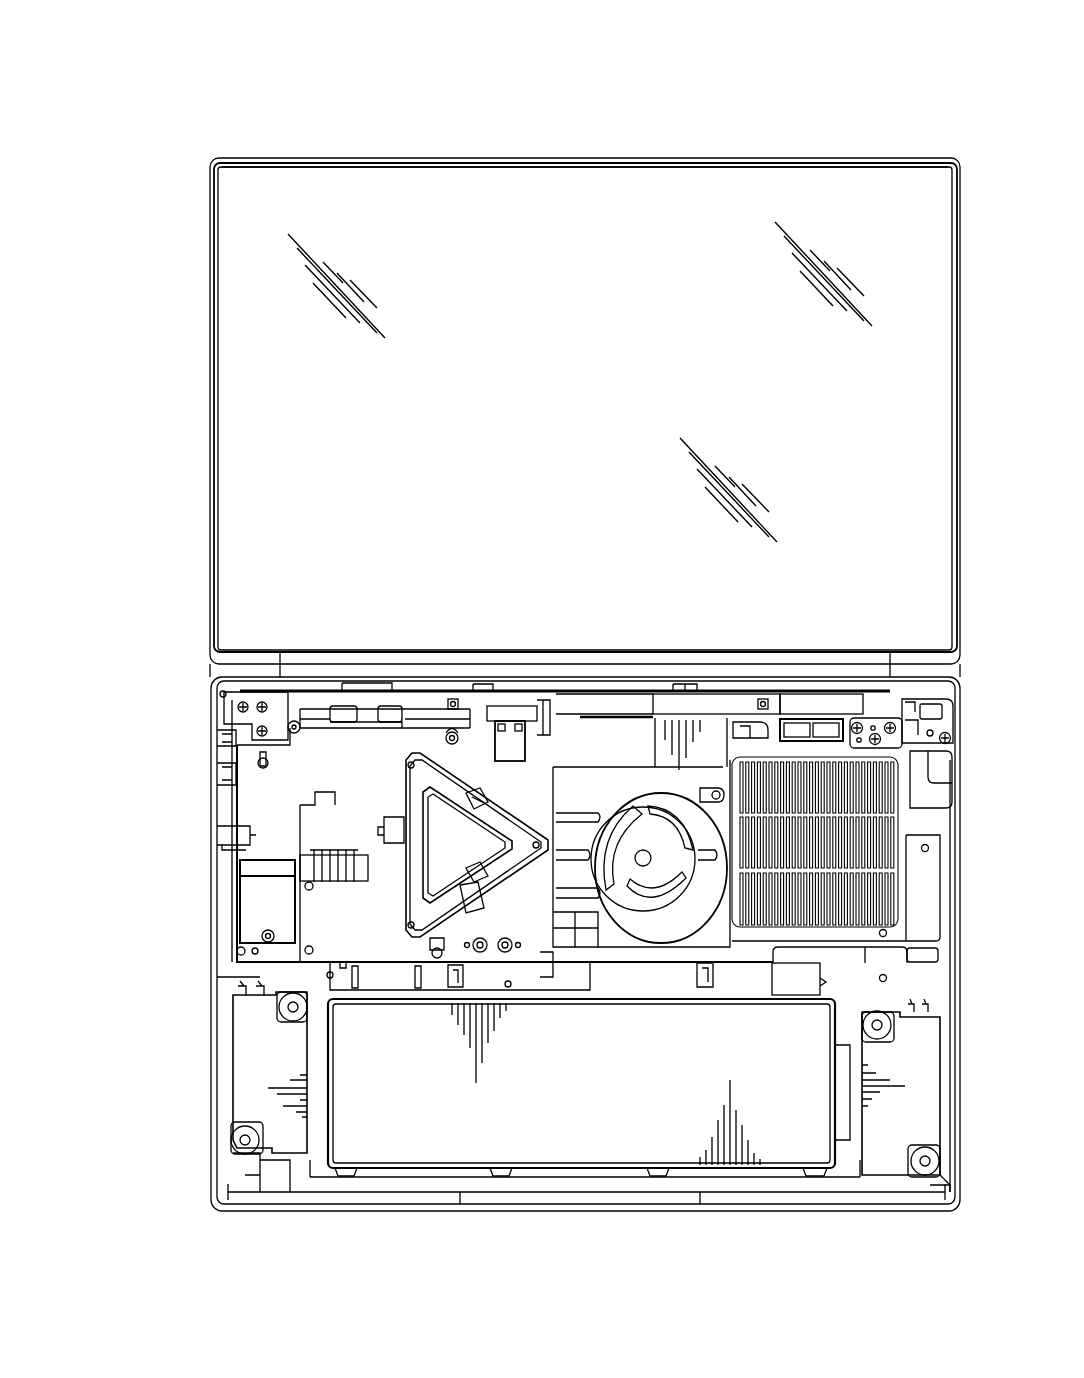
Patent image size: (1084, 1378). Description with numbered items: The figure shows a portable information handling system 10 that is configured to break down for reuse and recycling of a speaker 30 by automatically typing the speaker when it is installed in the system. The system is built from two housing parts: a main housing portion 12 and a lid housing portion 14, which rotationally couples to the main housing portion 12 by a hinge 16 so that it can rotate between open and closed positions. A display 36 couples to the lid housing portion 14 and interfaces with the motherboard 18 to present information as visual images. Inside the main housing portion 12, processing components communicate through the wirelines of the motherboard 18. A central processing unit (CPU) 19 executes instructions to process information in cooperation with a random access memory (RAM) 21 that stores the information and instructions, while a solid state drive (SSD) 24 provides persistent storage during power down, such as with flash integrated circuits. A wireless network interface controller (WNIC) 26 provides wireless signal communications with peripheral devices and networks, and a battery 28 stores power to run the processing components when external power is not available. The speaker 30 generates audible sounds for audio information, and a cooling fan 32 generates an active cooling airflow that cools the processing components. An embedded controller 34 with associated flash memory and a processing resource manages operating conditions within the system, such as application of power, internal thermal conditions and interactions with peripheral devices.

The portable information handling system 10 is at (326, 111).
The main housing portion 12 is at (330, 1212).
The lid housing portion 14 is at (786, 158).
The hinge 16 is at (866, 720).
The motherboard 18 is at (232, 800).
The central processing unit (CPU) 19 is at (437, 815).
The random access memory (RAM) 21 is at (372, 915).
The solid state drive (SSD) 24 is at (258, 903).
The wireless network interface controller (WNIC) 26 is at (508, 718).
The battery 28 is at (566, 1116).
The speaker 30 is at (262, 1088).
The cooling fan 32 is at (617, 782).
The embedded controller 34 is at (327, 830).
The display 36 is at (573, 398).